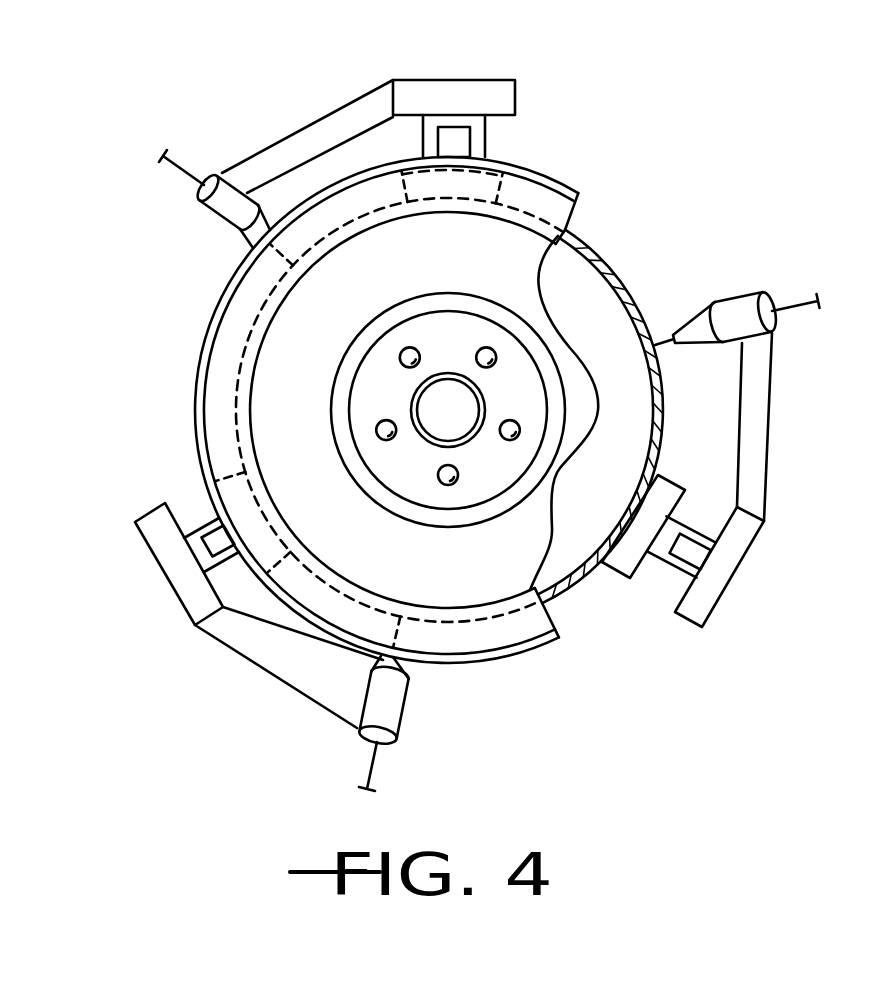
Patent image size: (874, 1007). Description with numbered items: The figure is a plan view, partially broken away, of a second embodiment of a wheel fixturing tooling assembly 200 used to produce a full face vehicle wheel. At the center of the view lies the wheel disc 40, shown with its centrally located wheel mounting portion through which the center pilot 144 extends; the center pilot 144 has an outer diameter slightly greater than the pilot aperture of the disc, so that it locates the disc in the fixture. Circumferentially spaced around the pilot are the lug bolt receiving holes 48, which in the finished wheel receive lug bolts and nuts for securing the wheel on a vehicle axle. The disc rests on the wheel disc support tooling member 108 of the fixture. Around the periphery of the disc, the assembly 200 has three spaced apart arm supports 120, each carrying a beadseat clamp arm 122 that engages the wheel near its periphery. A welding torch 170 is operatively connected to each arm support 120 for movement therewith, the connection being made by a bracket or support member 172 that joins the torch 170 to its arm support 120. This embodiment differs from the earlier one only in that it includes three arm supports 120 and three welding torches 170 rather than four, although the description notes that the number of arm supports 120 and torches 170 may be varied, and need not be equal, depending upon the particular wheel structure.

The wheel disc 40 is at (643, 284).
The lug bolt receiving holes 48 is at (412, 348).
The wheel disc support tooling member 108 is at (196, 353).
The arm supports 120 is at (455, 92).
The beadseat clamp arm 122 is at (517, 190).
The center pilot 144 is at (463, 428).
The welding torches 170 is at (206, 200).
The bracket or support member 172 is at (358, 117).
The wheel fixturing tooling assembly 200 is at (758, 163).